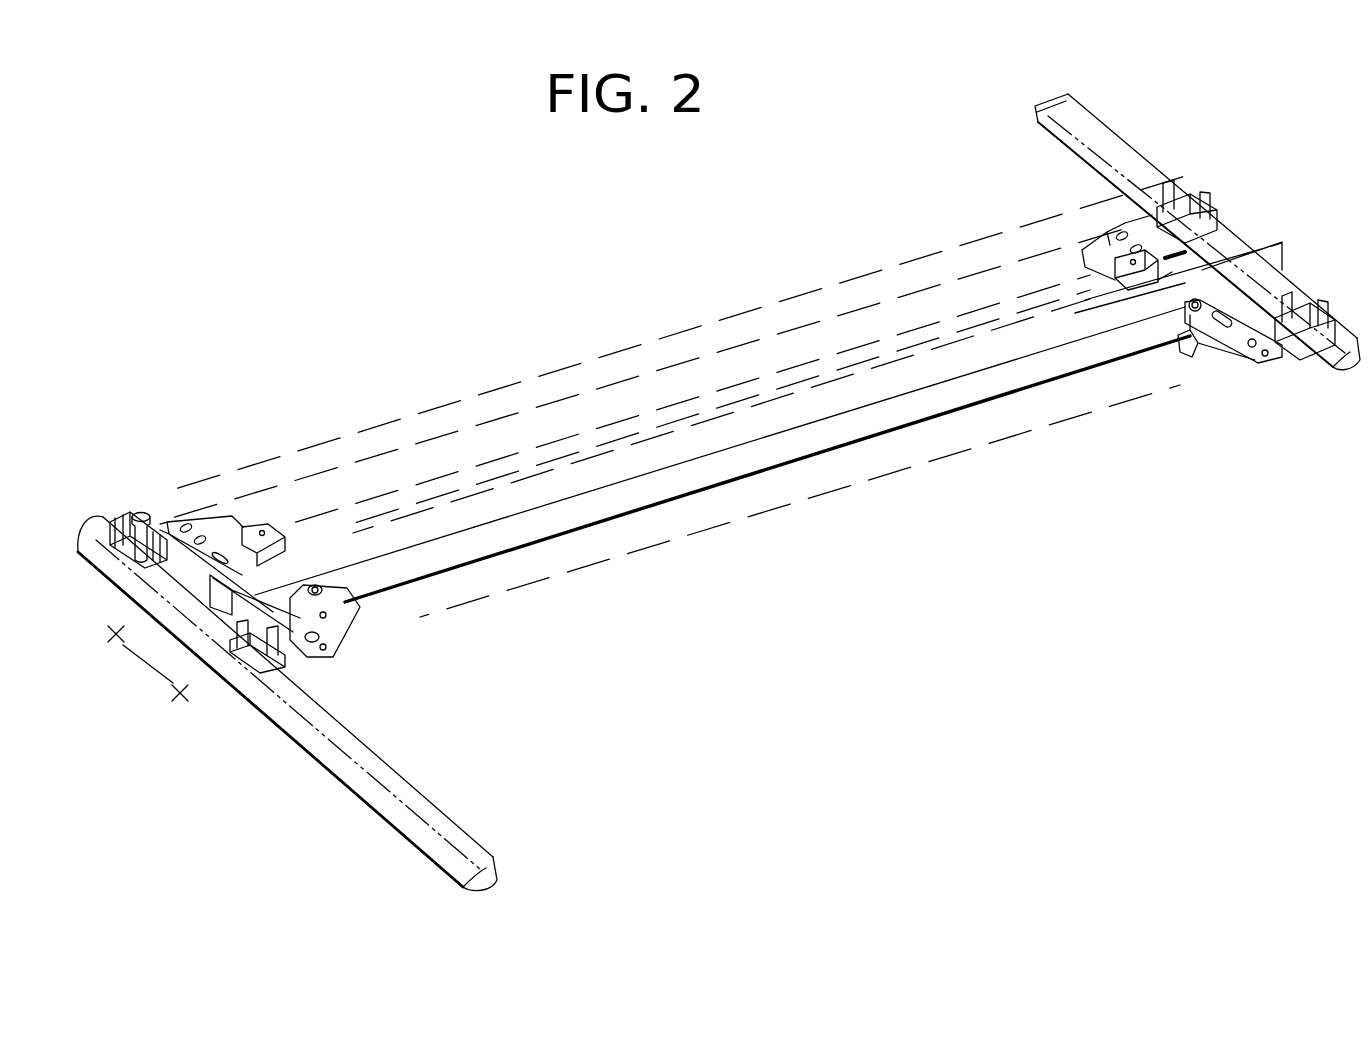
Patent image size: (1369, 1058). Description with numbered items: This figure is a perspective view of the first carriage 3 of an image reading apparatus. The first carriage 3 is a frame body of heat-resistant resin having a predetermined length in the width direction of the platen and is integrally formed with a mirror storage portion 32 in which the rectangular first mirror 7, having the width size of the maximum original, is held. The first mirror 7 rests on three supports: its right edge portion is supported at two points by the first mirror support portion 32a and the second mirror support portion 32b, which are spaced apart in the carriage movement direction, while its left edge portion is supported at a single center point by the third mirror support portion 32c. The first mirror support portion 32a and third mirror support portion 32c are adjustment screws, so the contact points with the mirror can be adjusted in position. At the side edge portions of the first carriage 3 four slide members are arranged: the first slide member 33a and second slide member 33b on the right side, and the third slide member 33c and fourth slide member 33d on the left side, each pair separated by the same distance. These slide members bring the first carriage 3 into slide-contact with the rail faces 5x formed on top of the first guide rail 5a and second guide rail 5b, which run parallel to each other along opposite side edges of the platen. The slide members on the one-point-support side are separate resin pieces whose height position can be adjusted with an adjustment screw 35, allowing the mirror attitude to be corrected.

The first carriage 3 is at (453, 403).
The first guide rail 5a is at (1063, 147).
The second guide rail 5b is at (437, 807).
The rail face 5x is at (1112, 150).
The first mirror 7 is at (466, 553).
The mirror storage portion 32 is at (1222, 322).
The first mirror support portion 32a is at (1200, 300).
The second mirror support portion 32b is at (1185, 350).
The third mirror support portion 32c is at (340, 590).
The first slide member 33a is at (1303, 292).
The second slide member 33b is at (1185, 200).
The third slide member 33c is at (247, 672).
The fourth slide member 33d is at (120, 510).
The adjustment screw 35 is at (148, 512).